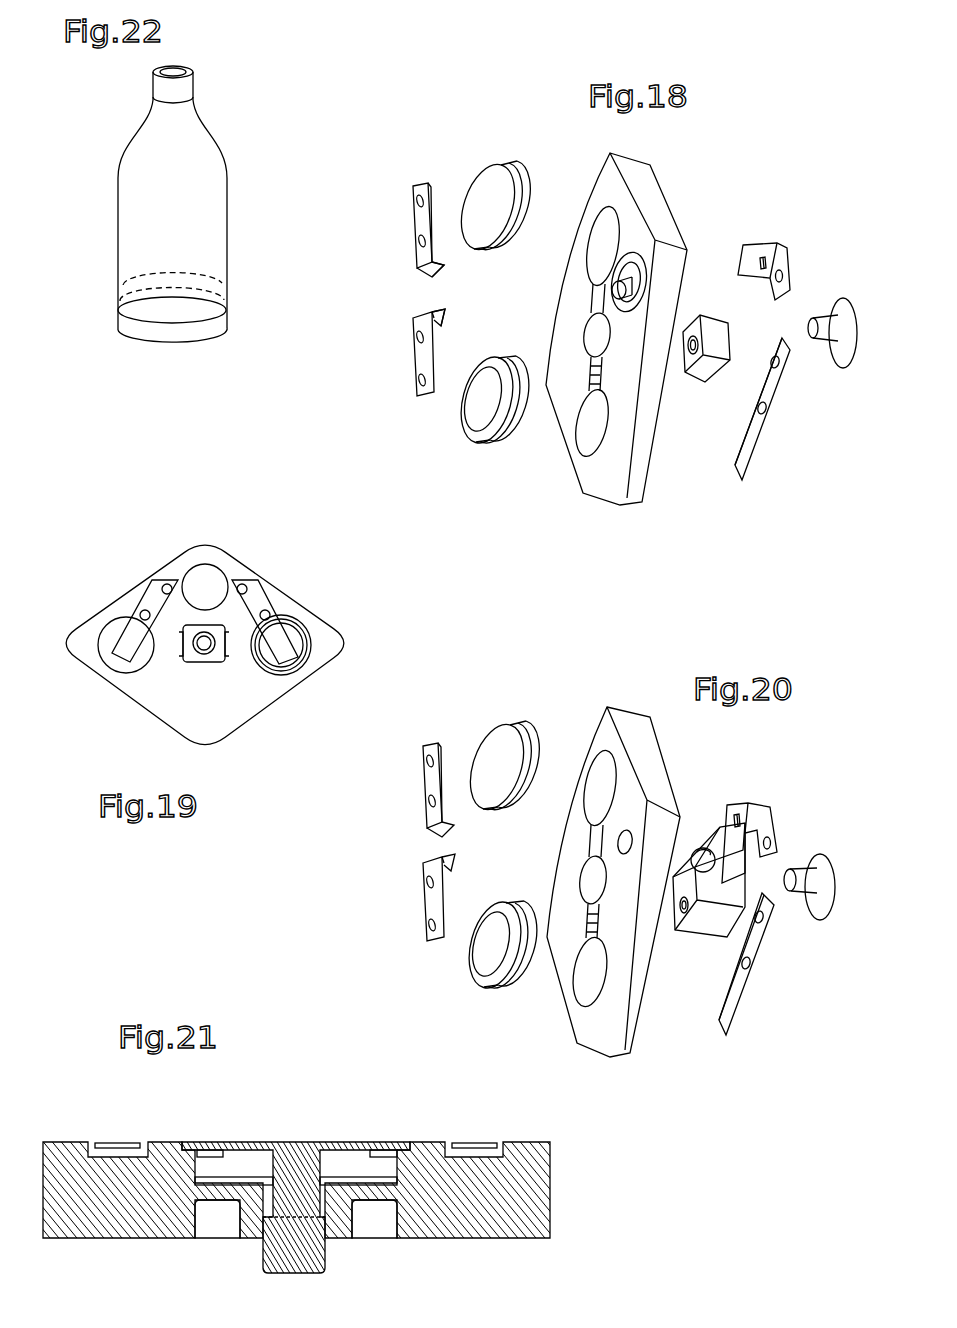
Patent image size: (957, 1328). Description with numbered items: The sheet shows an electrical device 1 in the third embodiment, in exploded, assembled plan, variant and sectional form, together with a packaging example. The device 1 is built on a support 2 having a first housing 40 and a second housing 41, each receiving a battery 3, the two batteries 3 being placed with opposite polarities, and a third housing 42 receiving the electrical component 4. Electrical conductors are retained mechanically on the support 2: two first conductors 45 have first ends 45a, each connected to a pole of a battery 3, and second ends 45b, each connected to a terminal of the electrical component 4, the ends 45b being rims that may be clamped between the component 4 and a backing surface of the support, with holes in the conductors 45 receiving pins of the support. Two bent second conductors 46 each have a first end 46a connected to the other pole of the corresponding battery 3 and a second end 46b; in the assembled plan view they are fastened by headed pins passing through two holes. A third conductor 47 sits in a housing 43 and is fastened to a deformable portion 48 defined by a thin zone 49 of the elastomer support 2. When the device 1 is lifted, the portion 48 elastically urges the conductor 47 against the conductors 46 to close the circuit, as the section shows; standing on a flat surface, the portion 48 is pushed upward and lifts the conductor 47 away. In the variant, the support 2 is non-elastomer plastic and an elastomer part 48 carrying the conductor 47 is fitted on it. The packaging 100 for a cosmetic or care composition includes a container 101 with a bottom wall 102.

In FIG. 22, the electrical device 1 is at (197, 332).
In FIG. 19, the support 2 is at (63, 660).
In FIG. 20, the support 2 is at (638, 718).
In FIG. 21, the support 2 is at (62, 1142).
In FIG. 18, the battery 3 is at (490, 192).
In FIG. 20, the battery 3 is at (492, 740).
In FIG. 18, the electrical component 4 is at (697, 373).
In FIG. 19, the electrical component 4 is at (188, 662).
In FIG. 20, the electrical component 4 is at (687, 930).
In FIG. 18, the first housing 40 is at (602, 329).
In FIG. 18, the second housing 41 is at (597, 418).
In FIG. 18, the third housing 42 is at (592, 333).
In FIG. 18, the housing 43 is at (630, 242).
In FIG. 18, the first conductor 45 is at (413, 217).
In FIG. 20, the first conductor 45 is at (430, 773).
In FIG. 18, the first end 45a is at (418, 388).
In FIG. 18, the second end 45b is at (425, 260).
In FIG. 18, the second conductor 46 is at (782, 350).
In FIG. 20, the second conductor 46 is at (751, 805).
In FIG. 18, the first end 46a is at (748, 468).
In FIG. 19, the first end 46a is at (127, 638).
In FIG. 19, the second end 46b is at (243, 584).
In FIG. 21, the second end 46b is at (194, 1142).
In FIG. 18, the third conductor 47 is at (826, 318).
In FIG. 19, the third conductor 47 is at (205, 582).
In FIG. 20, the third conductor 47 is at (820, 858).
In FIG. 21, the third conductor 47 is at (296, 1187).
In FIG. 20, the deformable portion 48 is at (700, 848).
In FIG. 21, the deformable portion 48 is at (283, 1253).
In FIG. 21, the thin zone 49 is at (377, 1203).
In FIG. 22, the packaging 100 is at (177, 224).
In FIG. 22, the container 101 is at (128, 178).
In FIG. 22, the bottom wall 102 is at (153, 312).